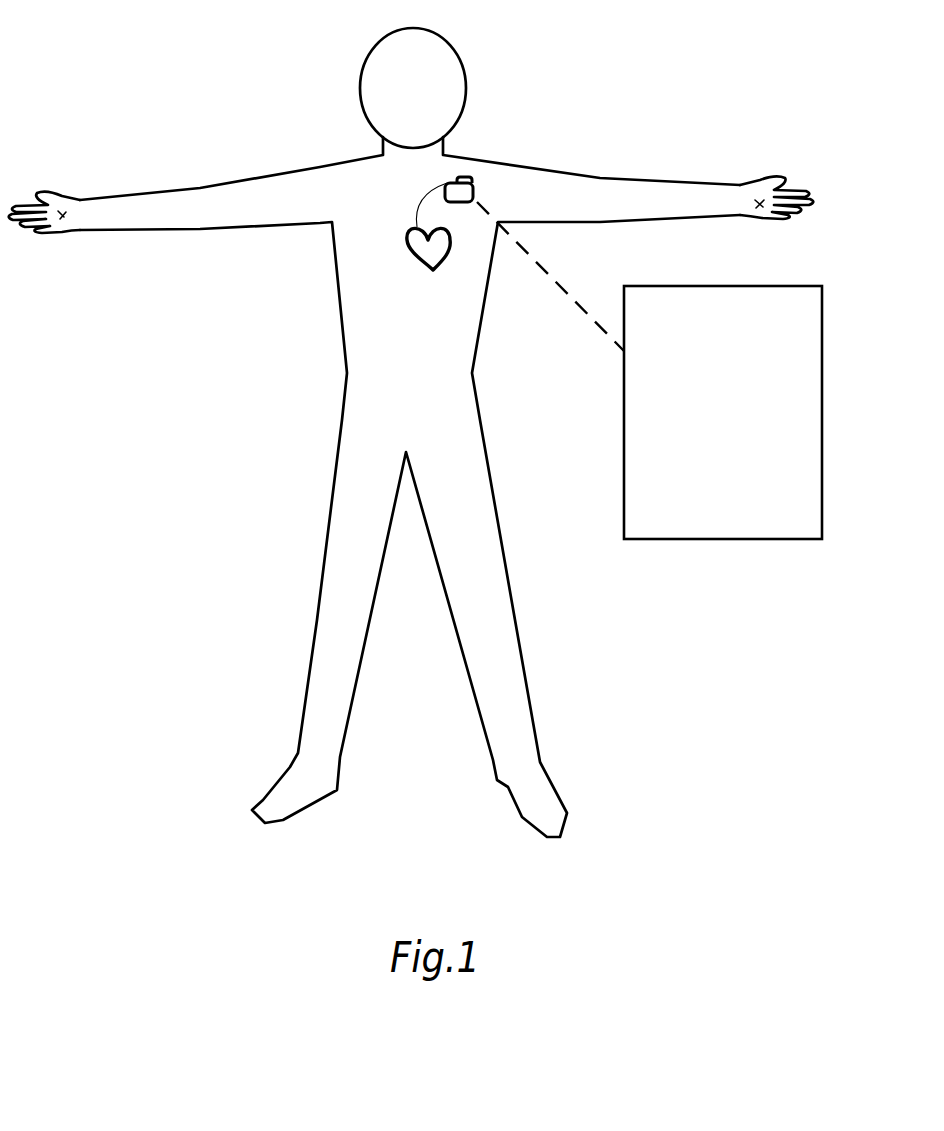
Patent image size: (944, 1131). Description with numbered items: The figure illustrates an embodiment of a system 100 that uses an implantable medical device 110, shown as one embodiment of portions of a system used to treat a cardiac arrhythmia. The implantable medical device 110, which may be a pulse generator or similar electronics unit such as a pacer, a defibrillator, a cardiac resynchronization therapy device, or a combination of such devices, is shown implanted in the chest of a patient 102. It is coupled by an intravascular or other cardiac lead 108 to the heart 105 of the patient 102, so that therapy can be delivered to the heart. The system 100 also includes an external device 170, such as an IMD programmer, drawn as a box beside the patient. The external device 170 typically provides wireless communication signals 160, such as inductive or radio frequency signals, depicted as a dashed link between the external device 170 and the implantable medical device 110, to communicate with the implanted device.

The system 100 is at (151, 19).
The patient 102 is at (338, 326).
The heart 105 is at (417, 266).
The cardiac lead 108 is at (413, 209).
The implantable medical device 110 is at (474, 192).
The wireless communication signals 160 is at (551, 275).
The external device 170 is at (823, 412).